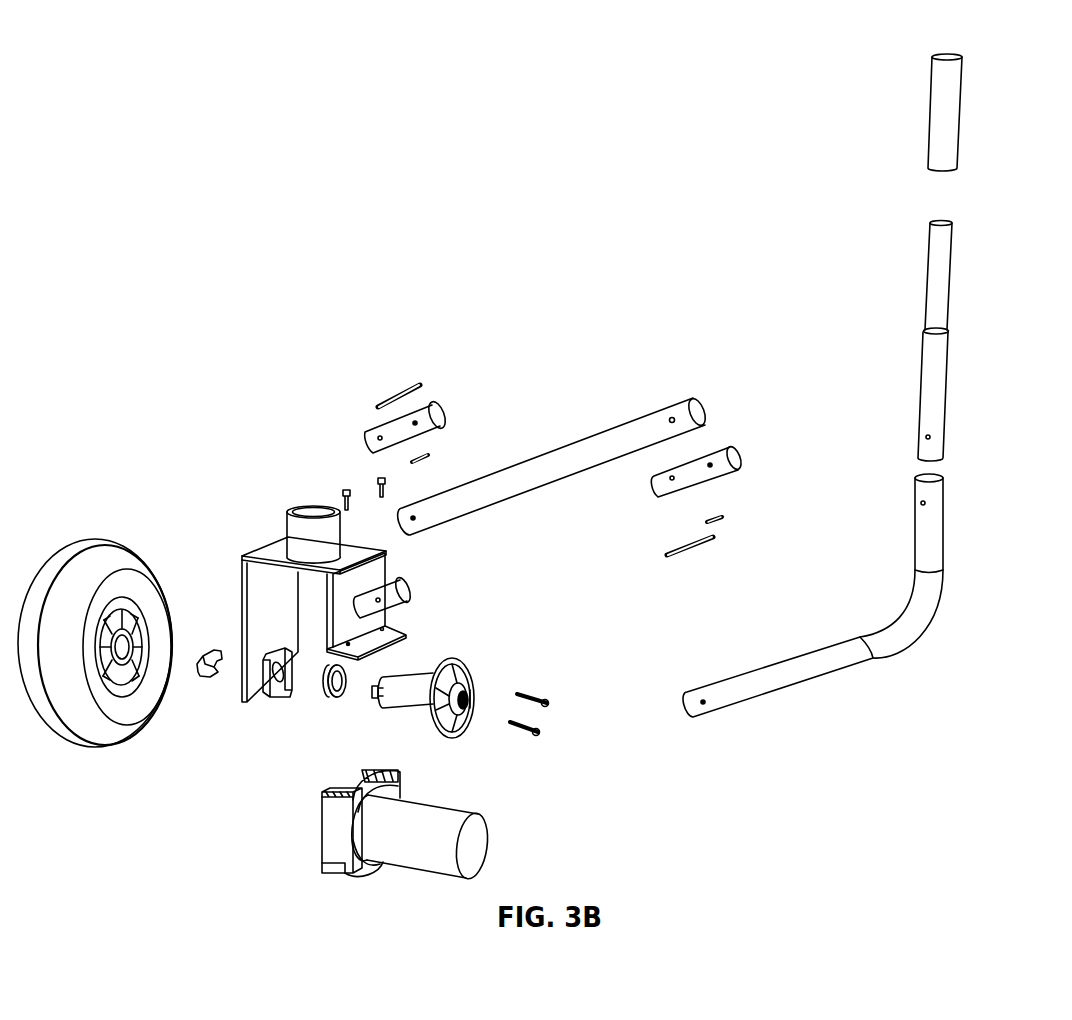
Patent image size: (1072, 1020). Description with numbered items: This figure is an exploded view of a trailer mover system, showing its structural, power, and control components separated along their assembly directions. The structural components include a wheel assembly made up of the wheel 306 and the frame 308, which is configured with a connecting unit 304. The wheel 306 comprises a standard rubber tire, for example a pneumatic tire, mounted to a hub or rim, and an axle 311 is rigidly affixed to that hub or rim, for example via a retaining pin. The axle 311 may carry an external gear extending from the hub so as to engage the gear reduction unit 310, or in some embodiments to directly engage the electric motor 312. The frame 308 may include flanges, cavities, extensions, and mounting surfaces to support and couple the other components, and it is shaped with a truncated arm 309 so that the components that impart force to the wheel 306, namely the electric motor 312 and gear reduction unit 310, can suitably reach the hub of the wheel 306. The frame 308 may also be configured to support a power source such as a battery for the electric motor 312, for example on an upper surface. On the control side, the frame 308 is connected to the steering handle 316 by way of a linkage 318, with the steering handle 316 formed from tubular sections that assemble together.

The connecting unit 304 is at (292, 532).
The wheel 306 is at (107, 563).
The frame 308 is at (270, 558).
The truncated arm 309 is at (367, 580).
The gear reduction unit 310 is at (333, 838).
The axle 311 is at (407, 690).
The electric motor 312 is at (472, 852).
The steering handle 316 is at (917, 560).
The linkage 318 is at (390, 600).